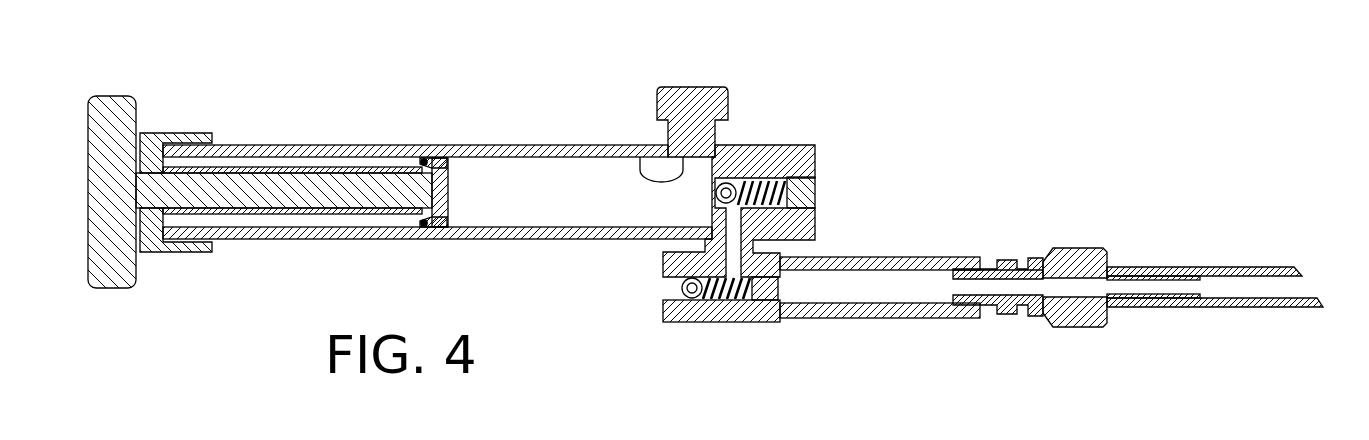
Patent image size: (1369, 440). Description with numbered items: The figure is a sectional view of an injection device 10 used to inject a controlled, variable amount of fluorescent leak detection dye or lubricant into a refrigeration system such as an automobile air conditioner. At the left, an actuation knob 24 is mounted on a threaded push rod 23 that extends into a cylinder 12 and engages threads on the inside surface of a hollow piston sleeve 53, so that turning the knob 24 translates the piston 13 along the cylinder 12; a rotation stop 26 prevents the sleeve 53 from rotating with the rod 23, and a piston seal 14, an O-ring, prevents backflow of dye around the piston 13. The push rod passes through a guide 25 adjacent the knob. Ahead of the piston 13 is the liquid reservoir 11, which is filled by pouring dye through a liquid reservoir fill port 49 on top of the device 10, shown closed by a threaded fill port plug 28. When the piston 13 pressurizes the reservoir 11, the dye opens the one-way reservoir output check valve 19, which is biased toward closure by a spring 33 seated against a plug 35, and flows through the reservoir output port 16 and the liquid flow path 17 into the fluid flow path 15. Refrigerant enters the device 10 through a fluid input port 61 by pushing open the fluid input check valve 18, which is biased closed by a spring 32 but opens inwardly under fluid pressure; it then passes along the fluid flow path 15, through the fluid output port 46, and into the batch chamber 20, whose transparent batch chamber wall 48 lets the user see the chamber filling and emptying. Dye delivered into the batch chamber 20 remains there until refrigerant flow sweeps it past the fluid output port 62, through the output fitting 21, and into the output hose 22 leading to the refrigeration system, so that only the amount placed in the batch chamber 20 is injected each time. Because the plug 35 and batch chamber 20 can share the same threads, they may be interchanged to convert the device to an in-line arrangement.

The injection device 10 is at (890, 89).
The liquid reservoir 11 is at (502, 182).
The cylinder 12 is at (560, 150).
The piston 13 is at (447, 195).
The piston seal 14 is at (443, 160).
The fluid flow path 15 is at (767, 285).
The reservoir output port 16 is at (713, 190).
The liquid flow path 17 is at (735, 255).
The fluid input check valve 18 is at (693, 299).
The reservoir output check valve 19 is at (734, 184).
The batch chamber 20 is at (913, 282).
The output fitting 21 is at (1007, 265).
The output hose 22 is at (1232, 306).
The threaded push rod 23 is at (273, 197).
The actuation knob 24 is at (115, 108).
The collar 25 is at (152, 240).
The rotation stop 26 is at (425, 224).
The threaded fill port plug 28 is at (690, 100).
The spring 32 is at (712, 300).
The spring 33 is at (772, 192).
The plug 35 is at (808, 192).
The fluid output port 46 is at (783, 290).
The transparent batch chamber wall 48 is at (942, 318).
The liquid reservoir fill port 49 is at (650, 178).
The hollow piston sleeve 53 is at (296, 212).
The fluid input port 61 is at (661, 289).
The fluid output port 62 is at (1076, 287).